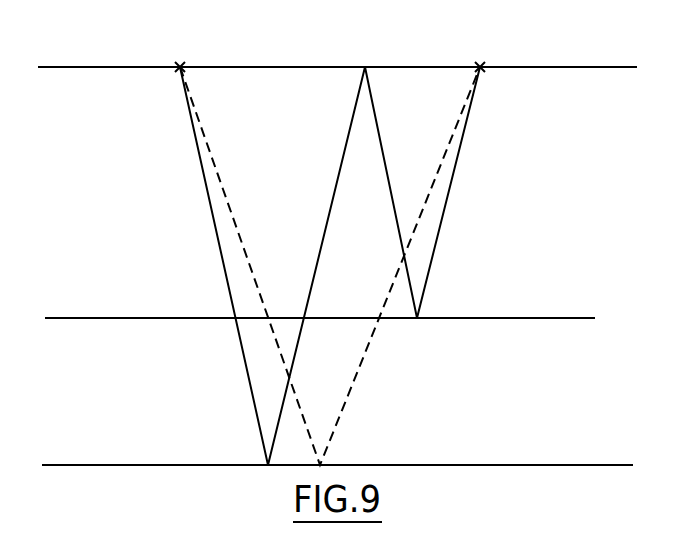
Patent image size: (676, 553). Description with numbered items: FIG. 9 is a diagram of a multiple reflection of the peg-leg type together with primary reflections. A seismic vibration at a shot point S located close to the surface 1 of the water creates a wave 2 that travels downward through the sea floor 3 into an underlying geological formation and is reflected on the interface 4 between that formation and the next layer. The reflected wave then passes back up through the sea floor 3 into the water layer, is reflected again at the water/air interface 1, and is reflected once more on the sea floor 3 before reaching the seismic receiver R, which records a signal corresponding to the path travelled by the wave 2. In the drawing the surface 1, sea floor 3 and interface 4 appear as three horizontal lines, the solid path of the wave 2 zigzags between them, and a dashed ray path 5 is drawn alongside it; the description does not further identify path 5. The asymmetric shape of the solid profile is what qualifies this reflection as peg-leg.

The surface of the water 1 is at (77, 67).
The wave 2 is at (207, 192).
The sea floor 3 is at (550, 318).
The interface 4 is at (560, 465).
The dashed ray path 5 is at (353, 382).
The shot point S is at (180, 67).
The seismic receiver R is at (480, 67).